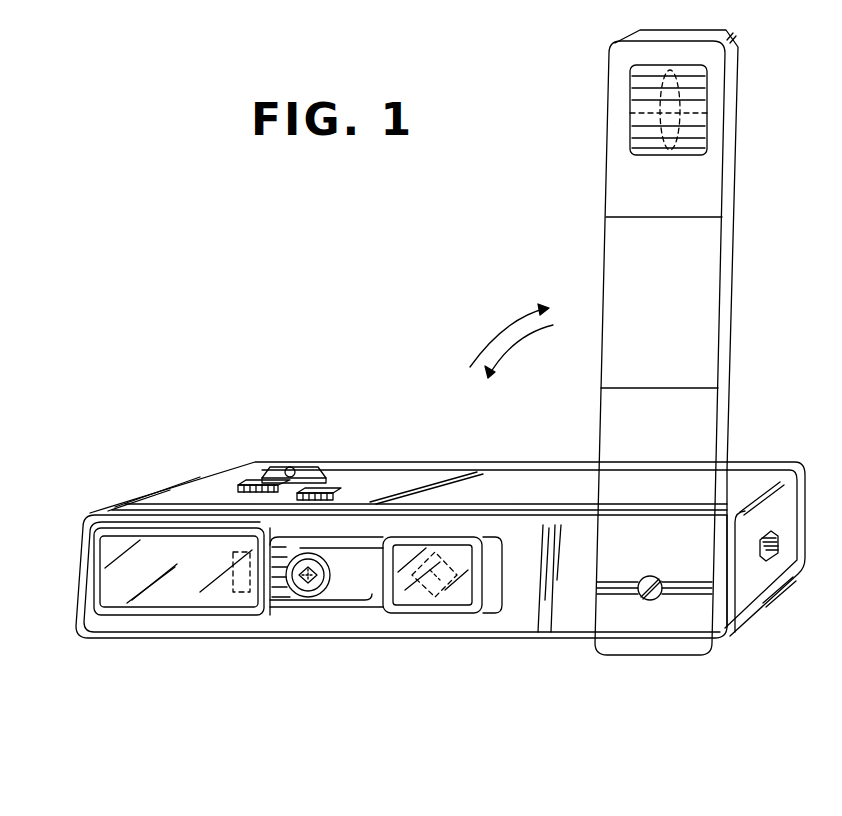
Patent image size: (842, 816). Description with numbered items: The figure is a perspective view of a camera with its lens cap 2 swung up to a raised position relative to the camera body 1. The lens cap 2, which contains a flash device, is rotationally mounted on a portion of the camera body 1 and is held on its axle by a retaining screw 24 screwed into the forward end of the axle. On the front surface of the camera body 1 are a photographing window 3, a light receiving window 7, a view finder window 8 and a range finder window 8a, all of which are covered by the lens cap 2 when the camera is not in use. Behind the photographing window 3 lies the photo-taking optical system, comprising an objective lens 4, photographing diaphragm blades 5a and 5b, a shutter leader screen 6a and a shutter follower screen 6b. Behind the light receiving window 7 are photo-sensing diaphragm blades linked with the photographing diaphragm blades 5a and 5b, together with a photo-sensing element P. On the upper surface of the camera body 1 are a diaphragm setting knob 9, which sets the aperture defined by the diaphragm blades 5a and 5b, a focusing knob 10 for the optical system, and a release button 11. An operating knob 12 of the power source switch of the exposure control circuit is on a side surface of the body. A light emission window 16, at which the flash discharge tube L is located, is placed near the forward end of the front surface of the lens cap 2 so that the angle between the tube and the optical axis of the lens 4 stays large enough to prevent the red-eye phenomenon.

The camera body 1 is at (559, 586).
The lens cap 2 is at (655, 326).
The photographing window 3 is at (455, 610).
The objective lens 4 is at (403, 597).
The photographing diaphragm blade 5a is at (296, 598).
The photographing diaphragm blade 5b is at (334, 590).
The shutter leader screen 6a is at (432, 594).
The shutter follower screen 6b is at (421, 592).
The light receiving window 7 is at (322, 592).
The view finder window 8 is at (160, 600).
The range finder window 8a is at (243, 594).
The diaphragm setting knob 9 is at (322, 492).
The focusing knob 10 is at (246, 484).
The release button 11 is at (288, 467).
The operating knob of power source switch 12 is at (778, 540).
The light emission window 16 is at (630, 113).
The retaining screw 24 is at (650, 577).
The flash discharge tube L is at (707, 113).
The photo-sensing element P is at (307, 598).